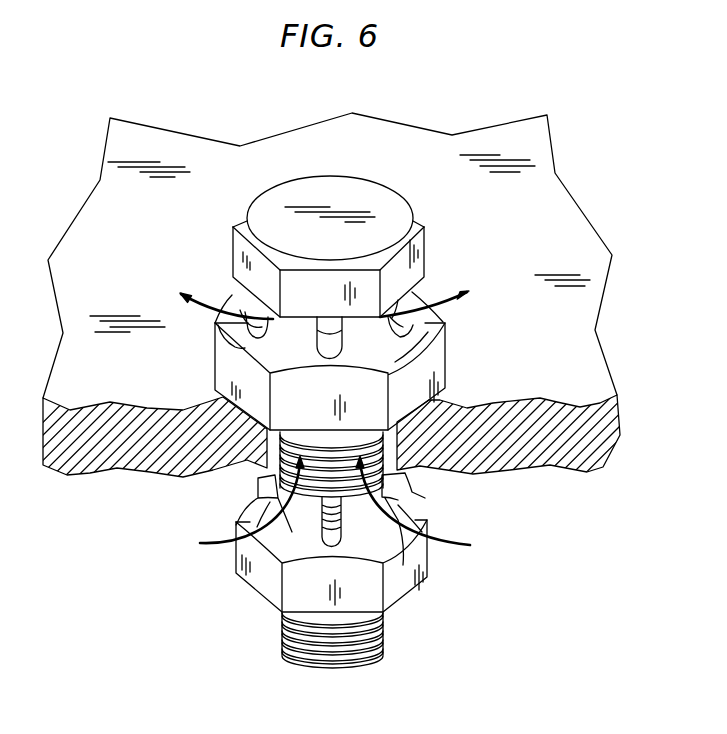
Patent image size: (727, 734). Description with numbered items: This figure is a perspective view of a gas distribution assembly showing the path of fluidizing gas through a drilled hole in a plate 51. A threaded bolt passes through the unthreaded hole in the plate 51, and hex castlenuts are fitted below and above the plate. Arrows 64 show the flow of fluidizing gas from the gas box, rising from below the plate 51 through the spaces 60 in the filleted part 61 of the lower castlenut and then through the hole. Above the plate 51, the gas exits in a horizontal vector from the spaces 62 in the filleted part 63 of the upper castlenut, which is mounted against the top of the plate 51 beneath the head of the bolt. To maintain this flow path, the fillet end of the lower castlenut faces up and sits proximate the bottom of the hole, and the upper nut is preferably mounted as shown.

The plate 51 is at (595, 440).
The spaces 60 is at (280, 568).
The filleted part 61 is at (427, 522).
The spaces 62 is at (328, 348).
The filleted part 63 is at (447, 362).
The arrows 64 is at (332, 506).